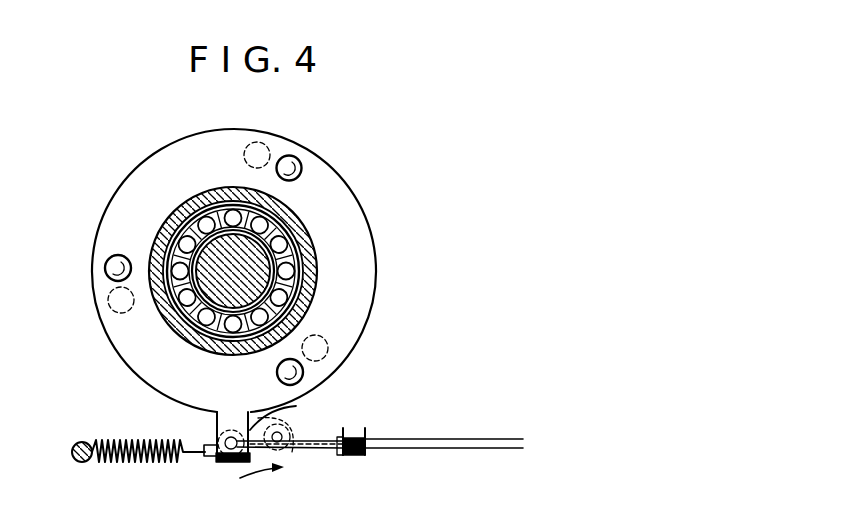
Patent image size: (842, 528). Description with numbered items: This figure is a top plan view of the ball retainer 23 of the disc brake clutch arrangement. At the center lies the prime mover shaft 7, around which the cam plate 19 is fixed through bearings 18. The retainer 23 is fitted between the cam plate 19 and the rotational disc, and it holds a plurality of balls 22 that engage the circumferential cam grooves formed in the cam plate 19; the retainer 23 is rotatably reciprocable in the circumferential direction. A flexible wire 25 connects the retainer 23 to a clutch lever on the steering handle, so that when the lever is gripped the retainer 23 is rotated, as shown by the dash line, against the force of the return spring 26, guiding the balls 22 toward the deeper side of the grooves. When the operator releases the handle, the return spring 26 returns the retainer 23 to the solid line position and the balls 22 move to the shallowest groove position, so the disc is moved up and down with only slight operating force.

The prime mover shaft 7 is at (212, 294).
The bearings 18 is at (283, 268).
The cam plate 19 is at (292, 221).
The balls 22 is at (297, 158).
The ball retainer 23 is at (355, 317).
The flexible wire 25 is at (302, 456).
The return spring 26 is at (132, 463).